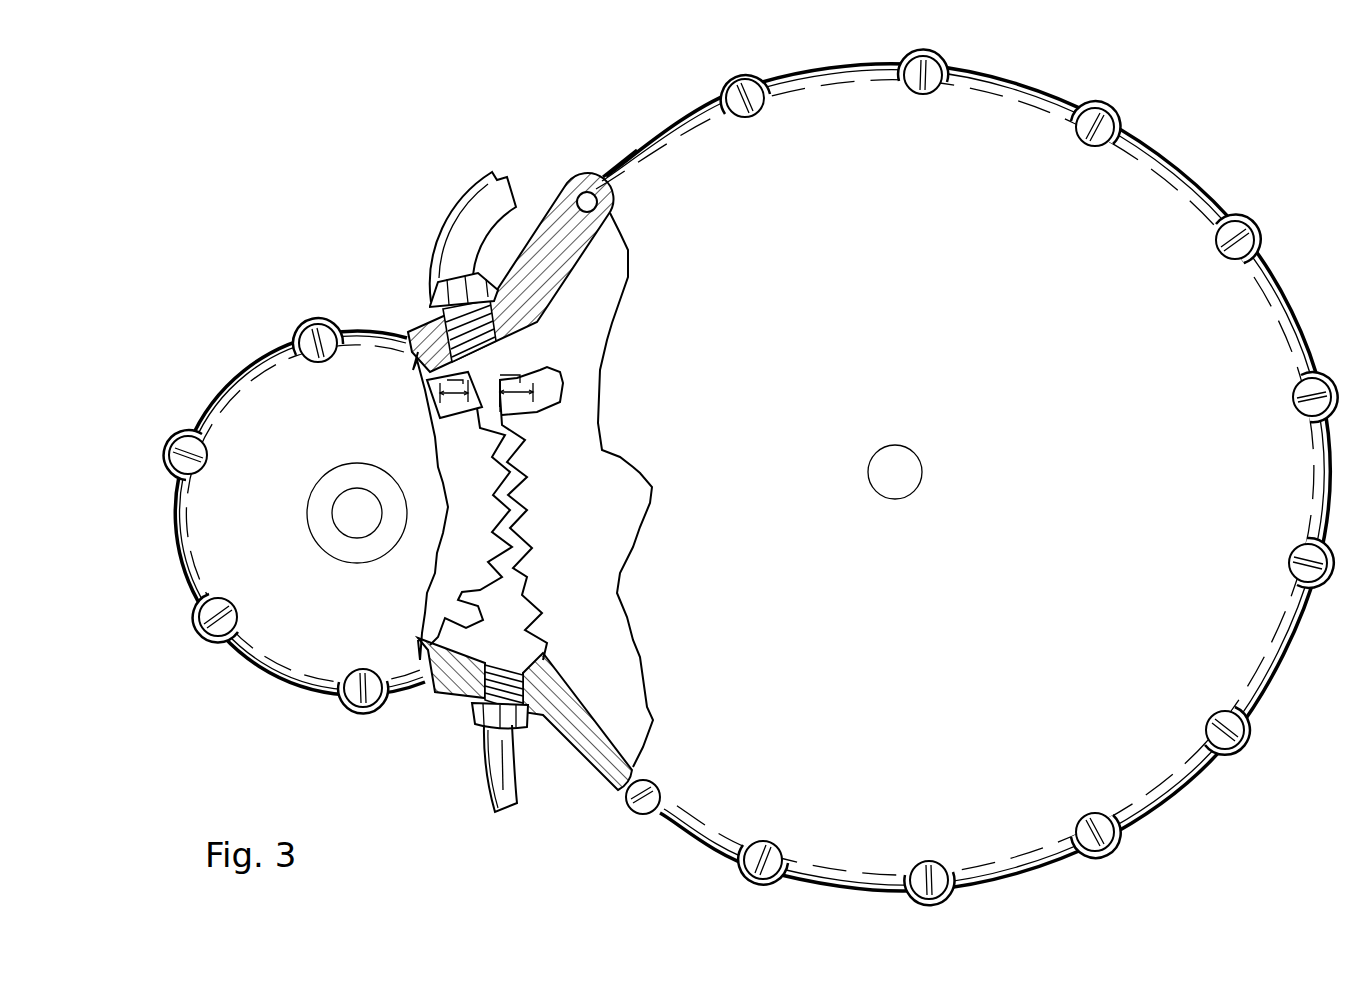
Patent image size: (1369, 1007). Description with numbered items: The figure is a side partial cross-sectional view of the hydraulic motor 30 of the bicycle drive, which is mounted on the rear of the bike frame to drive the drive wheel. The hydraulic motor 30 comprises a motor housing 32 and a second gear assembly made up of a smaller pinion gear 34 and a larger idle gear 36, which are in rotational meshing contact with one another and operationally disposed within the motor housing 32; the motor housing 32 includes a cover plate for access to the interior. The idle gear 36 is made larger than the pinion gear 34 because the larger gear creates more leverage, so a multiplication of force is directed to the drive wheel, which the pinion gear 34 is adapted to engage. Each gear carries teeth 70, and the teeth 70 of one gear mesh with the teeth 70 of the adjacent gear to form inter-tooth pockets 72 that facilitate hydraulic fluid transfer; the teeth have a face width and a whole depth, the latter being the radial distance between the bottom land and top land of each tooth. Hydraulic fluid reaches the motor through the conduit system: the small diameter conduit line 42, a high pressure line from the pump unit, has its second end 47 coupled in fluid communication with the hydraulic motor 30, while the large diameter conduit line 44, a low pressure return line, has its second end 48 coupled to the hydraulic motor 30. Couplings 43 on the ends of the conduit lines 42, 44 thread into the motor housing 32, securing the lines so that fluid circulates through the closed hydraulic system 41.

The hydraulic motor 30 is at (1140, 57).
The motor housing 32 is at (1212, 318).
The smaller pinion gear 34 is at (450, 535).
The larger idle gear 36 is at (610, 515).
The closed hydraulic system 41 is at (485, 205).
The small diameter conduit line 42 is at (512, 793).
The large diameter conduit line 44 is at (485, 205).
The couplings 43 is at (433, 307).
The second end of the small diameter conduit line 47 is at (487, 737).
The second end of the large diameter conduit line 48 is at (458, 268).
The teeth 70 is at (508, 425).
The inter-tooth pockets 72 is at (480, 430).